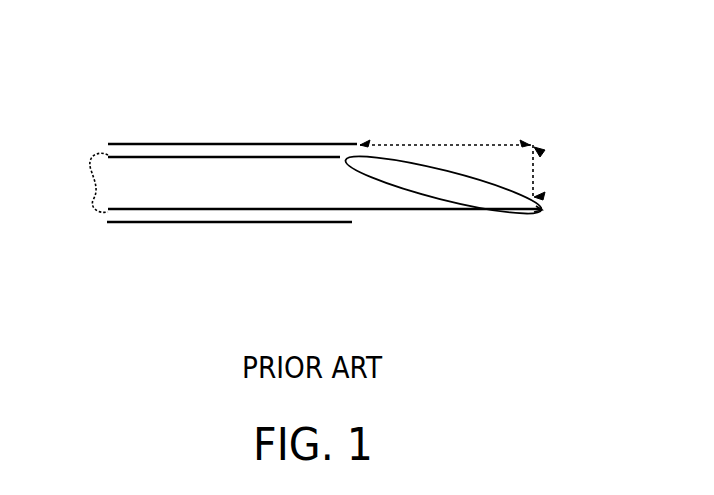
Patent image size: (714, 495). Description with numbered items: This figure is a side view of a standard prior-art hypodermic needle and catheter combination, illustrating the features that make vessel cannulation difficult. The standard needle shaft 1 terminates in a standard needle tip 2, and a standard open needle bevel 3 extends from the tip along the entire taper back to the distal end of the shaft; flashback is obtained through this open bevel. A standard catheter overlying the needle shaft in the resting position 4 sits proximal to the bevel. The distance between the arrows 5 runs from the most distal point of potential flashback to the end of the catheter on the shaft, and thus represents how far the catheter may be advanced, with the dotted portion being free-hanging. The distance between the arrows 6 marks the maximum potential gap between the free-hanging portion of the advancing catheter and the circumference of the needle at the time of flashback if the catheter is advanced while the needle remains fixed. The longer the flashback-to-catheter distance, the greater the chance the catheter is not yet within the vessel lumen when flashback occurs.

The standard needle shaft 1 is at (198, 209).
The standard needle tip 2 is at (545, 212).
The standard open needle bevel 3 is at (455, 183).
The standard catheter overlying needle shaft 4 is at (262, 223).
The distance between most distal point of potential flashback and end of catheter 5 is at (527, 143).
The maximum potential distance between free-hanging catheter portion and needle circ 6 is at (541, 196).